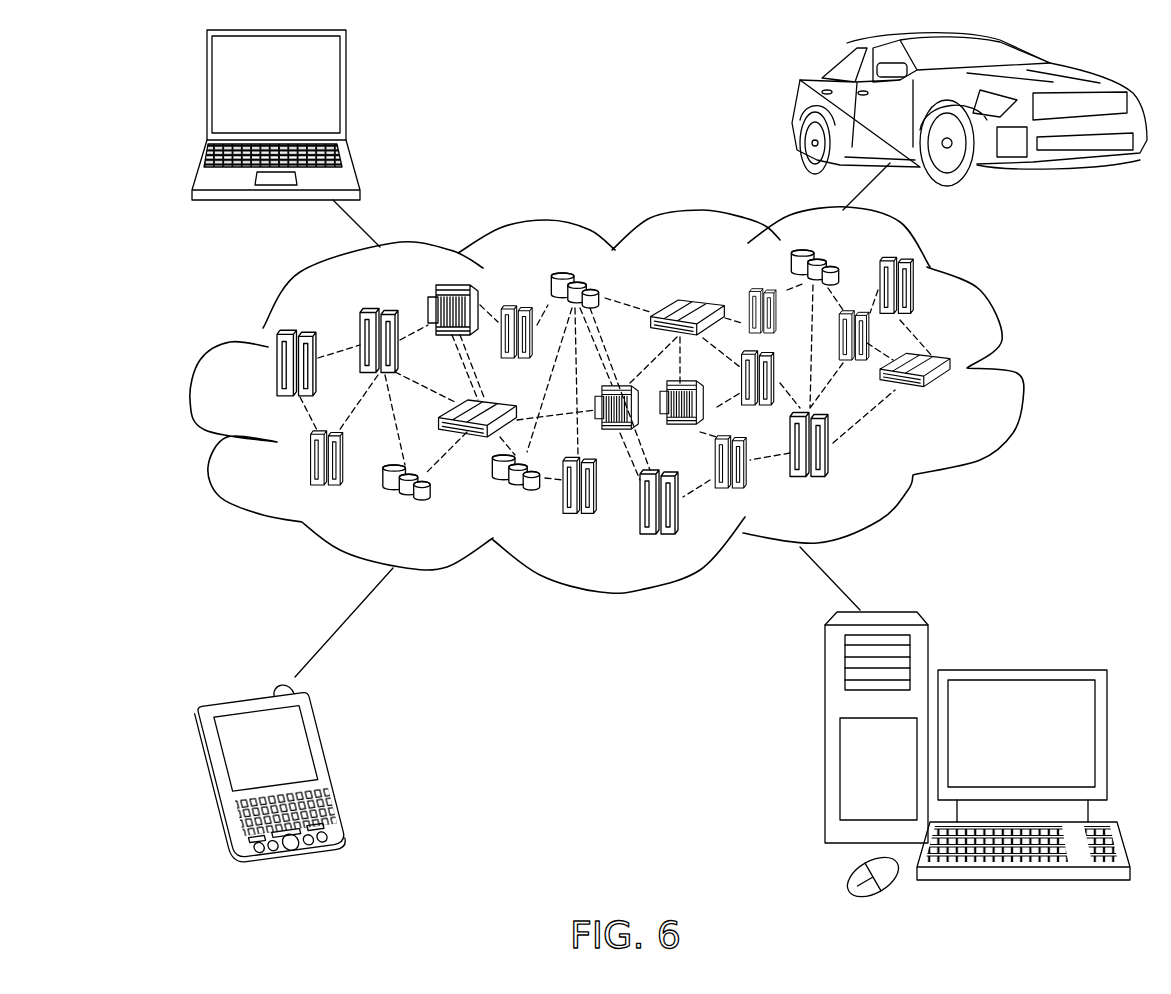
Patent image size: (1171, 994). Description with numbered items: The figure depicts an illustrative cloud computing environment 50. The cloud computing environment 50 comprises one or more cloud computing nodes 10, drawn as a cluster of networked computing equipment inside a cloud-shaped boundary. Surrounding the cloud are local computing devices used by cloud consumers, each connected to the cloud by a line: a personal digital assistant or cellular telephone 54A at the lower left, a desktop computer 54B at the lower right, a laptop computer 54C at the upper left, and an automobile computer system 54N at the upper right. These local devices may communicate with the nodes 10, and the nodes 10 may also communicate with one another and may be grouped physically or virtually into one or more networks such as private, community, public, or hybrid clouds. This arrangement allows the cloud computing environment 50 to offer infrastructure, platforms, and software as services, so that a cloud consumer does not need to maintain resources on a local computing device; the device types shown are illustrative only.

The cloud computing node 10 is at (963, 404).
The cloud computing environment 50 is at (1020, 375).
The personal digital assistant or cellular telephone 54A is at (337, 760).
The desktop computer 54B is at (1020, 669).
The laptop computer 54C is at (346, 93).
The automobile computer system 54N is at (790, 109).